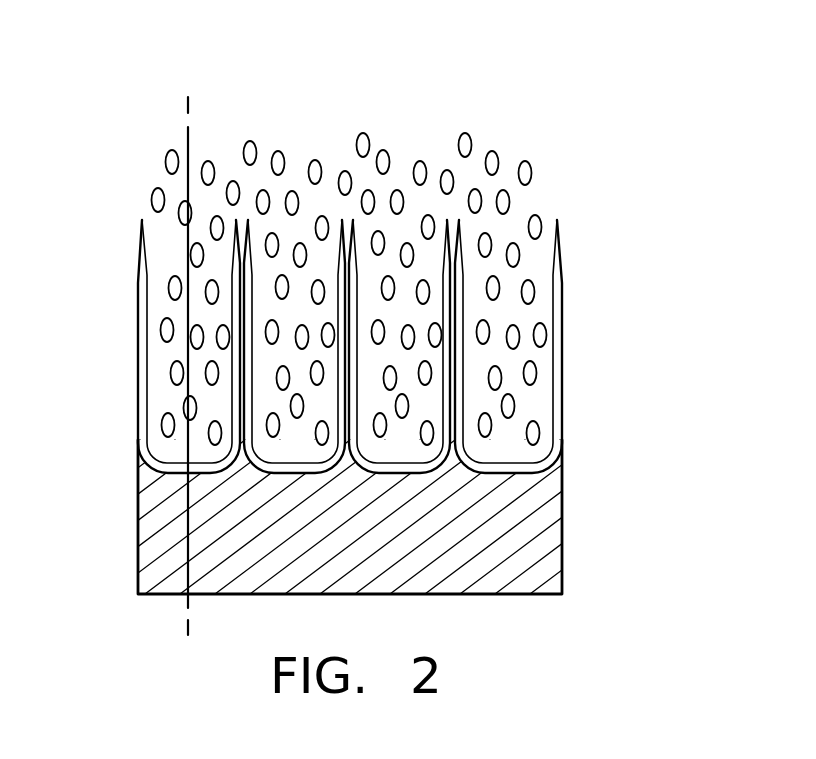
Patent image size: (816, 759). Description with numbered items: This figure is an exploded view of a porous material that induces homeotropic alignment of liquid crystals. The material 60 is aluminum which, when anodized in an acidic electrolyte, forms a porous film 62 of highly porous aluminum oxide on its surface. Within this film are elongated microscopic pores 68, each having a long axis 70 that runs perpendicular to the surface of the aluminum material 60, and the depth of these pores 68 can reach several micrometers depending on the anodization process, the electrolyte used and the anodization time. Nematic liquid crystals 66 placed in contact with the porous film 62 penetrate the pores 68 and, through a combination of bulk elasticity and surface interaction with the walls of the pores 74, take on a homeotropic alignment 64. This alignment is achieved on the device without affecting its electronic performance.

The material 60 is at (157, 496).
The porous film 62 is at (139, 297).
The homeotropic alignment 64 is at (374, 274).
The liquid crystals 66 is at (525, 170).
The elongated microscopic pores 68 is at (165, 252).
The long axis 70 is at (185, 568).
The walls of the pores 74 is at (150, 386).